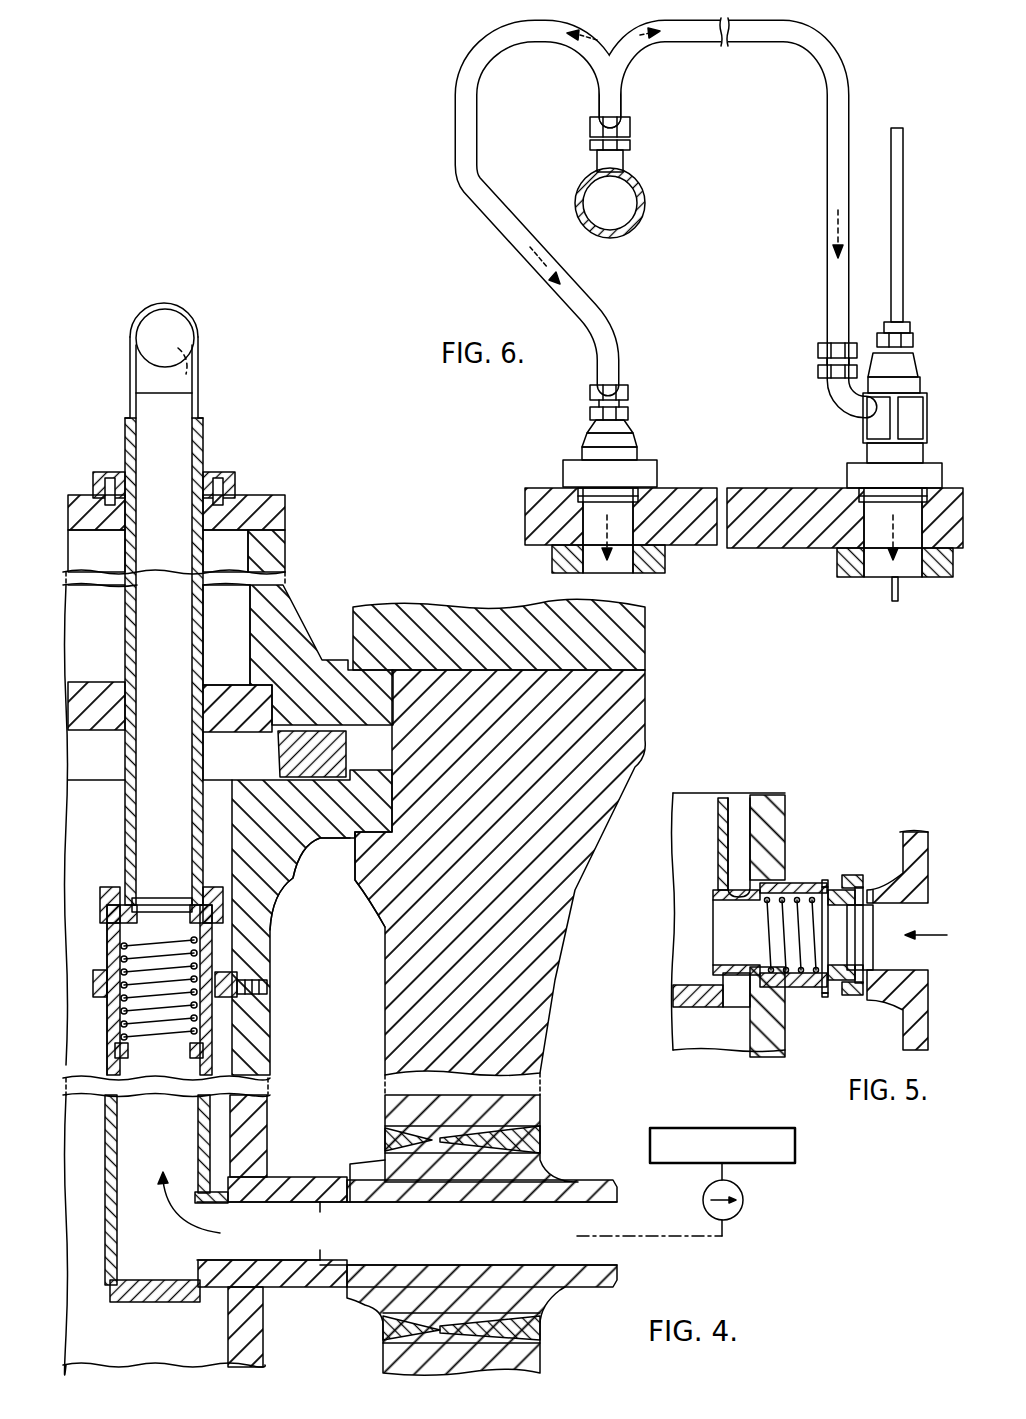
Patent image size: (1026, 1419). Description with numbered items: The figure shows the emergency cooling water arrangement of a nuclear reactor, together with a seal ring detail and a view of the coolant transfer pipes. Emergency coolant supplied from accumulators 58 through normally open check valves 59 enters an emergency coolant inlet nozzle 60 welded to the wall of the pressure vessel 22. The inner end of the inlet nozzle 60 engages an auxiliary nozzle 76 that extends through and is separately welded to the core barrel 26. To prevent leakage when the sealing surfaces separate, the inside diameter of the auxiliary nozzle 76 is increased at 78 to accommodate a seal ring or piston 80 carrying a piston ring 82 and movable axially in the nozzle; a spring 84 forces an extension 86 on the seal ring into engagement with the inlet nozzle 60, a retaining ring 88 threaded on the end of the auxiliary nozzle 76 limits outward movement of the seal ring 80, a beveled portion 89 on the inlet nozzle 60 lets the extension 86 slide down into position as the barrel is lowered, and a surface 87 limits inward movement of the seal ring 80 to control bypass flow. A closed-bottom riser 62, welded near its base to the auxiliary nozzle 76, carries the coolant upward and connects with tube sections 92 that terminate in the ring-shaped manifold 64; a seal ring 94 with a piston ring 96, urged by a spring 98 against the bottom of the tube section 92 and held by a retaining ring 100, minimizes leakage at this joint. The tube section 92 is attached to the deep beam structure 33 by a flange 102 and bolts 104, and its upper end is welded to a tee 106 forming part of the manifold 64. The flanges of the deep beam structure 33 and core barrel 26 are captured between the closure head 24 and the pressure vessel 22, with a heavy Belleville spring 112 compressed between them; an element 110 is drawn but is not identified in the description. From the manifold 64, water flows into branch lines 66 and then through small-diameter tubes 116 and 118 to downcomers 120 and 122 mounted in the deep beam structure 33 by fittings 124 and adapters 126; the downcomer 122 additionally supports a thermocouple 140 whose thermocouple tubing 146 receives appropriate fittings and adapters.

In FIG. 4, the pressure vessel 22 is at (537, 1038).
In FIG. 4, the closure head 24 is at (458, 615).
In FIG. 4, the core barrel 26 is at (268, 1024).
In FIG. 5, the core barrel 26 is at (780, 817).
In FIG. 4, the deep beam structure 33 is at (291, 515).
In FIG. 6, the deep beam structure 33 is at (782, 478).
In FIG. 4, the accumulators 58 is at (796, 1152).
In FIG. 4, the normally open check valves 59 is at (744, 1199).
In FIG. 4, the emergency coolant inlet nozzle 60 is at (577, 1191).
In FIG. 5, the emergency coolant inlet nozzle 60 is at (892, 874).
In FIG. 4, the riser 62 is at (104, 1183).
In FIG. 4, the manifold pipe 64 is at (190, 334).
In FIG. 6, the branch lines 66 is at (644, 198).
In FIG. 4, the auxiliary nozzle 76 is at (300, 1178).
In FIG. 5, the auxiliary nozzle 76 is at (800, 883).
In FIG. 5, the increased inside diameter 78 is at (822, 993).
In FIG. 5, the seal ring 80 is at (855, 993).
In FIG. 5, the piston ring 82 is at (832, 993).
In FIG. 5, the spring 84 is at (760, 933).
In FIG. 5, the extension 86 is at (860, 964).
In FIG. 5, the surface 87 is at (826, 887).
In FIG. 5, the retaining ring 88 is at (848, 875).
In FIG. 5, the beveled portion 89 is at (872, 878).
In FIG. 4, the tube sections 92 is at (124, 632).
In FIG. 4, the seal ring 94 is at (150, 912).
In FIG. 4, the piston ring 96 is at (118, 929).
In FIG. 4, the spring 98 is at (123, 1004).
In FIG. 4, the retaining ring 100 is at (99, 898).
In FIG. 4, the flange 102 is at (226, 480).
In FIG. 4, the bolts 104 is at (228, 494).
In FIG. 4, the tee 106 is at (199, 394).
In FIG. 4, the chamber 110 is at (372, 884).
In FIG. 4, the Belleville spring 112 is at (287, 753).
In FIG. 6, the small diameter tubes 116 is at (528, 268).
In FIG. 6, the small diameter tubes 118 is at (829, 186).
In FIG. 6, the downcomers 120 is at (624, 562).
In FIG. 6, the downcomer 122 is at (913, 572).
In FIG. 6, the fittings 124 is at (629, 127).
In FIG. 6, the adapters 126 is at (631, 150).
In FIG. 6, the thermocouple 140 is at (891, 589).
In FIG. 6, the thermocouple tubing 146 is at (897, 243).